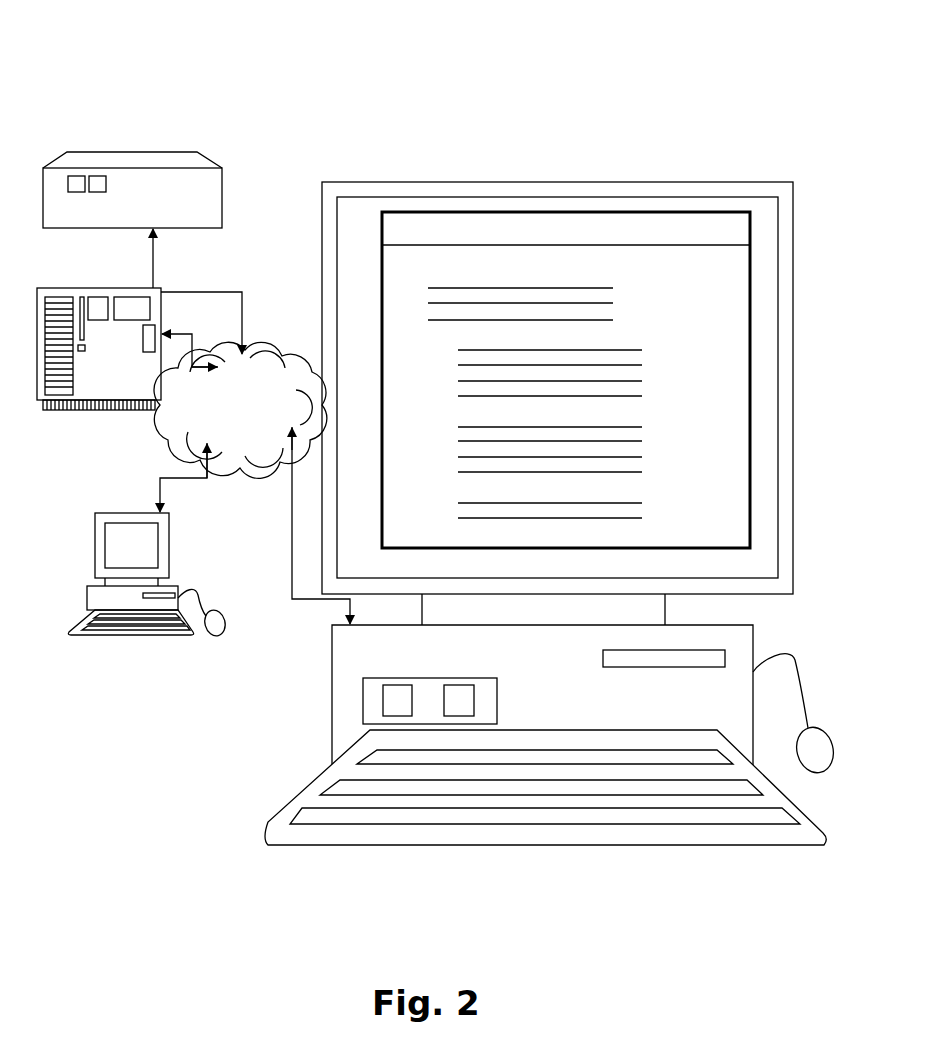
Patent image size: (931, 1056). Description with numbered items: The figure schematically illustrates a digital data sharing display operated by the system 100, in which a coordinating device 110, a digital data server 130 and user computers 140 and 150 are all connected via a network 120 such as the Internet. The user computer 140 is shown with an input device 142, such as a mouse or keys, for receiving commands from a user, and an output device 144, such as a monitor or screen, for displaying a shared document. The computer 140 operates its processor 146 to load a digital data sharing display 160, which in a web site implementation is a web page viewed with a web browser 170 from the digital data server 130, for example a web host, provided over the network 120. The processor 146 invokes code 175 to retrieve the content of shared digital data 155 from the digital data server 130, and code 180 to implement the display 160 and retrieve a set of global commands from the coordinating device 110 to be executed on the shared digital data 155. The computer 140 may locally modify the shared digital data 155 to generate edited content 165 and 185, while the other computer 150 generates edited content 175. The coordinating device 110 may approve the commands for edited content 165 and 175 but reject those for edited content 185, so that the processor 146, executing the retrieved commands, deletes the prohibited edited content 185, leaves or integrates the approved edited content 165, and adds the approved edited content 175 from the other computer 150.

The system 100 is at (200, 104).
The coordinating device 110 is at (132, 190).
The network 120 is at (240, 410).
The digital data server 130 is at (99, 349).
The user computer 140 is at (557, 387).
The input device 142 is at (793, 655).
The output device 144 is at (735, 197).
The processor 146 is at (363, 683).
The user computer 150 is at (148, 575).
The shared digital data 155 is at (588, 288).
The digital data sharing display 160 is at (566, 372).
The edited content 165 is at (642, 365).
The web browser 170 is at (392, 212).
The code / edited content 175 is at (642, 440).
The code 180 is at (445, 685).
The edited content 185 is at (642, 503).